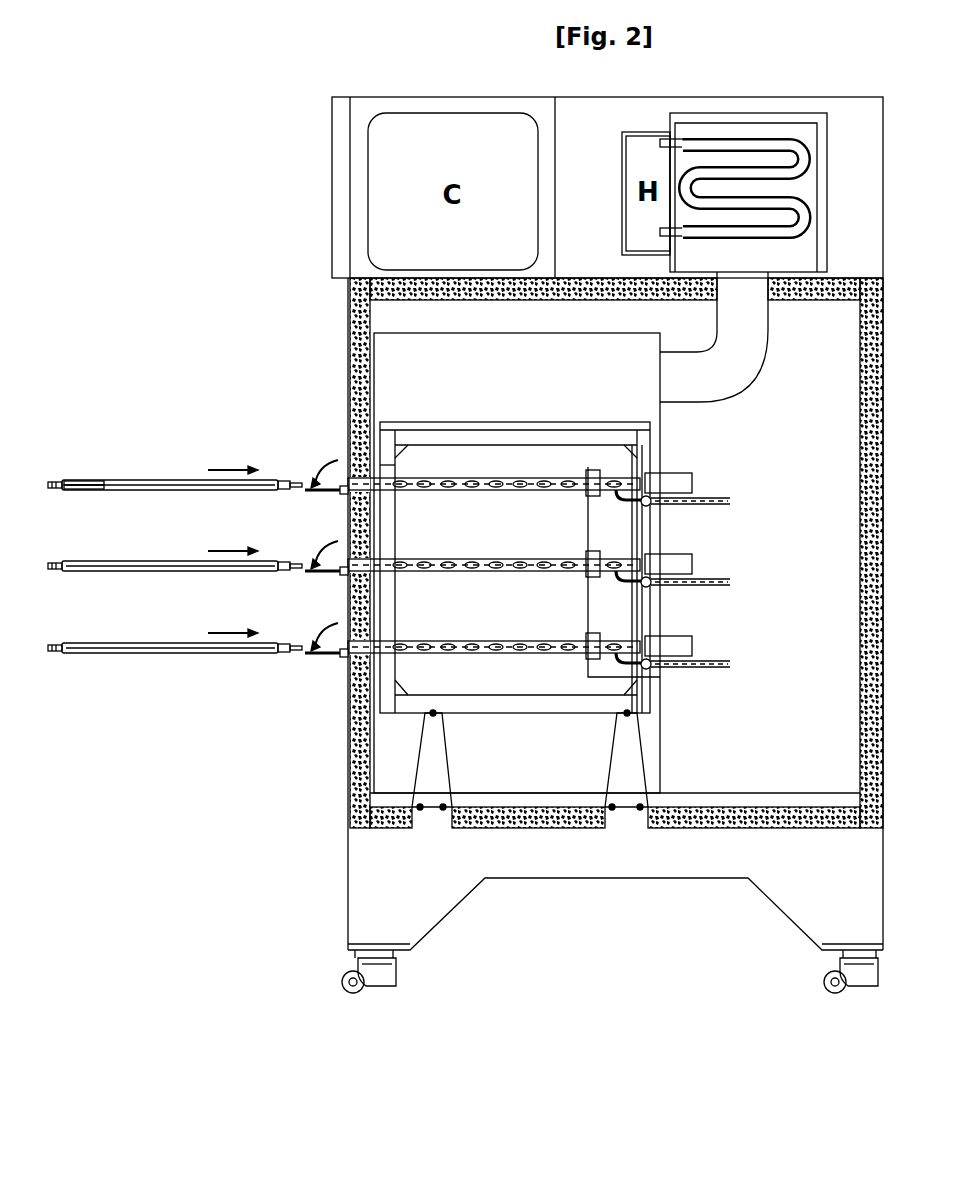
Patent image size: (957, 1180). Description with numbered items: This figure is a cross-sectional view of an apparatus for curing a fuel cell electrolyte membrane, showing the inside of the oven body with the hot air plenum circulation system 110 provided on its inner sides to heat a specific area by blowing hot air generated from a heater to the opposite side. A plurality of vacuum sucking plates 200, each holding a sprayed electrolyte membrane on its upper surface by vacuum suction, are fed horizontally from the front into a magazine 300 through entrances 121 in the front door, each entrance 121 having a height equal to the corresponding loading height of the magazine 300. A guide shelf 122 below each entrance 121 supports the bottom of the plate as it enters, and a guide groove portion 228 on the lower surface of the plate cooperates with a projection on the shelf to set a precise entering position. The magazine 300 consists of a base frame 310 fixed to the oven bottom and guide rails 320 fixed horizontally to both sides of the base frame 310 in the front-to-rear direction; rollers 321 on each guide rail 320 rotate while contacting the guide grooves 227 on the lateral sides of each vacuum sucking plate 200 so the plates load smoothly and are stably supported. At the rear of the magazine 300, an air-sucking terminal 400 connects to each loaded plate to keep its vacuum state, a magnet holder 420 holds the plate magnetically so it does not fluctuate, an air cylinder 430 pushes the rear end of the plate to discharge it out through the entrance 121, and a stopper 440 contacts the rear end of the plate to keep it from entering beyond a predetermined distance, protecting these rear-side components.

The hot air plenum circulation system 110 is at (405, 383).
The entrance 121 is at (338, 468).
The guide shelf 122 is at (325, 492).
The vacuum sucking plate 200 is at (163, 476).
The guide groove 227 is at (90, 483).
The guide groove portion 228 is at (93, 490).
The magazine 300 is at (658, 433).
The base frame 310 is at (648, 458).
The guide rail 320 is at (435, 655).
The roller 321 is at (475, 638).
The air-sucking terminal 400 is at (613, 510).
The magnet holder 420 is at (598, 480).
The air cylinder 430 is at (683, 483).
The stopper 440 is at (578, 480).